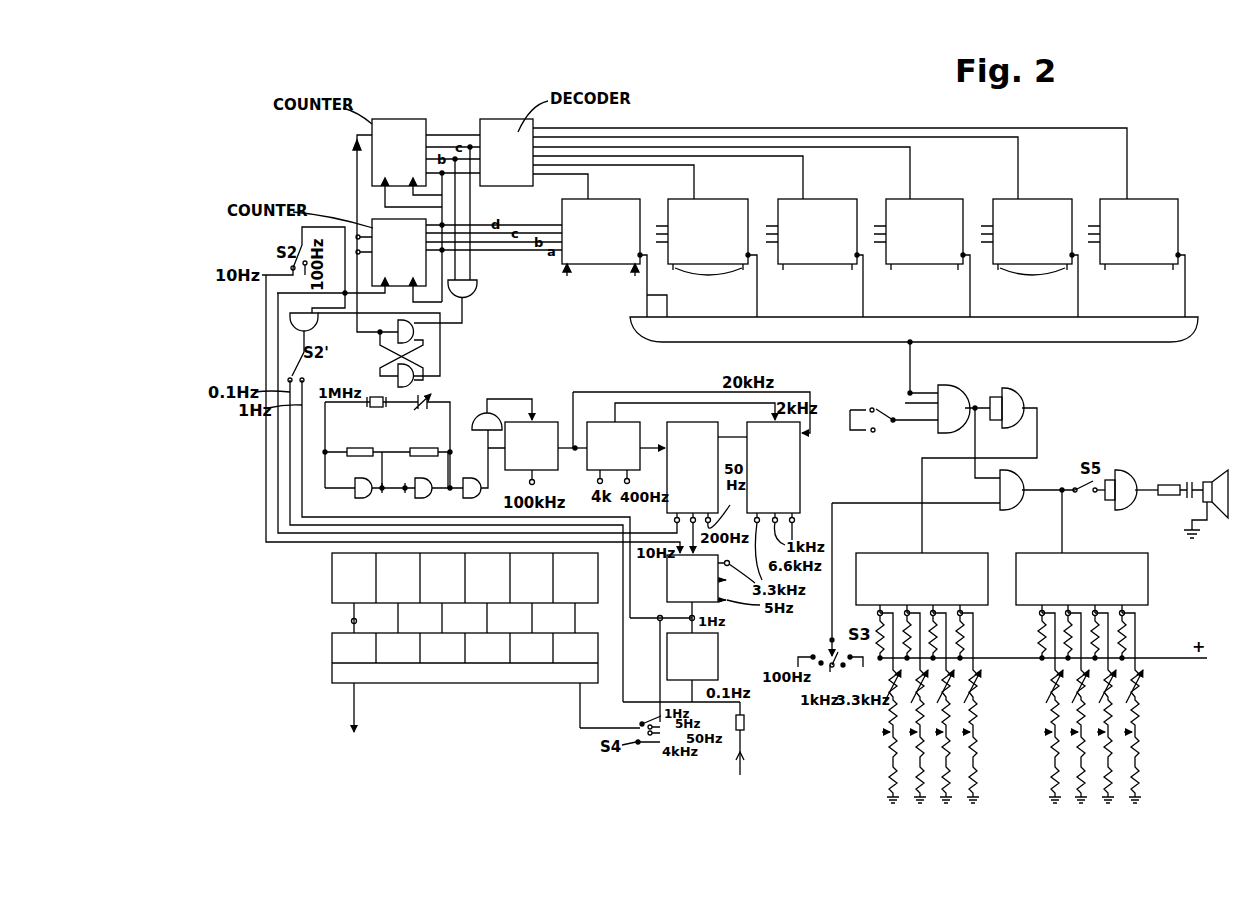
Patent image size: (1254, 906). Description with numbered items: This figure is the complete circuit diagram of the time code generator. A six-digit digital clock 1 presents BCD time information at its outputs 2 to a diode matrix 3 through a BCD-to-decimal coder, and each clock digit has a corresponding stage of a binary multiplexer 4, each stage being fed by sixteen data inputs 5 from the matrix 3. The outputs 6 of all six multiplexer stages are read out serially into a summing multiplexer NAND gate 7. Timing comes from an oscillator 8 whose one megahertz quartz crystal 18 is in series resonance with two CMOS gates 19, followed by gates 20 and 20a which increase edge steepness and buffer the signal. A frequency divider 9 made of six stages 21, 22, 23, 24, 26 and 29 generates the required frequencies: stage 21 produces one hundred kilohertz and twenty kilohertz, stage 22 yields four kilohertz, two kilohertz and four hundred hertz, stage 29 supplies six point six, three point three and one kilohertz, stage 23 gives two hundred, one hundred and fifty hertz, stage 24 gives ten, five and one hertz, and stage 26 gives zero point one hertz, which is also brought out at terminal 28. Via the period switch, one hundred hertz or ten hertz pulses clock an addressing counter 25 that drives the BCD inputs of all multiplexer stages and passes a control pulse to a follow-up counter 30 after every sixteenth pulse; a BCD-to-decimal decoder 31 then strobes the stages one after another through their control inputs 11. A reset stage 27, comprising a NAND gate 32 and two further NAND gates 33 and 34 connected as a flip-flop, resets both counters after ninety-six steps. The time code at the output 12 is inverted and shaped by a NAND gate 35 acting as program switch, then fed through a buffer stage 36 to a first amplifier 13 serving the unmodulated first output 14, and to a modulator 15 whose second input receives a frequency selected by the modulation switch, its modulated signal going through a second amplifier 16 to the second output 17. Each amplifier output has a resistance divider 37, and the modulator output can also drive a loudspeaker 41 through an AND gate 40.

The digital clock 1 is at (332, 582).
The outputs 2 is at (351, 621).
The diode matrix 3 is at (308, 657).
The binary multiplexer 4 is at (677, 207).
The data inputs 5 is at (870, 280).
The outputs 6 is at (647, 292).
The multiplexer NAND gate 7 is at (1120, 330).
The oscillator 8 is at (325, 425).
The frequency divider 9 is at (598, 467).
The control inputs 11 is at (694, 185).
The output 12 is at (912, 359).
The first amplifier 13 is at (868, 553).
The first output 14 is at (917, 733).
The modulator 15 is at (1020, 505).
The second amplifier 16 is at (1148, 582).
The second output 17 is at (1078, 733).
The quartz crystal 18 is at (372, 397).
The CMOS gates 19 is at (415, 494).
The gate 20 is at (481, 495).
The buffer 20a is at (483, 413).
The frequency divider stage 21 is at (546, 453).
The frequency divider stage 22 is at (627, 453).
The frequency divider stage 23 is at (698, 487).
The frequency divider stage 24 is at (713, 594).
The addressing counter 25 is at (382, 233).
The frequency divider stage 26 is at (681, 669).
The reset stage 27 is at (434, 342).
The terminal 28 is at (746, 752).
The frequency divider stage 29 is at (773, 501).
The follow-up counter 30 is at (384, 132).
The BCD-to-decimal decoder 31 is at (505, 132).
The NAND gate 32 is at (476, 292).
The NAND gate 33 is at (414, 376).
The NAND gate 34 is at (415, 333).
The NAND gate 35 is at (955, 386).
The buffer stage 36 is at (1015, 386).
The resistance divider 37 is at (917, 772).
The AND gate 40 is at (1125, 470).
The loudspeaker 41 is at (1218, 516).